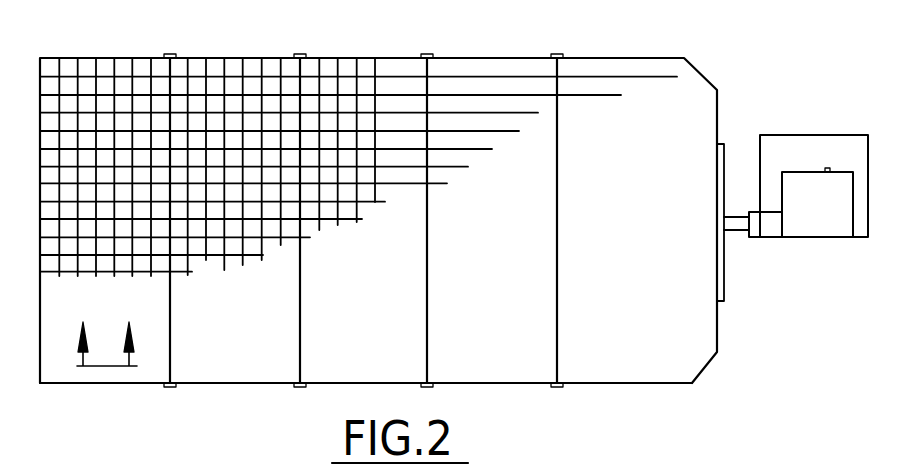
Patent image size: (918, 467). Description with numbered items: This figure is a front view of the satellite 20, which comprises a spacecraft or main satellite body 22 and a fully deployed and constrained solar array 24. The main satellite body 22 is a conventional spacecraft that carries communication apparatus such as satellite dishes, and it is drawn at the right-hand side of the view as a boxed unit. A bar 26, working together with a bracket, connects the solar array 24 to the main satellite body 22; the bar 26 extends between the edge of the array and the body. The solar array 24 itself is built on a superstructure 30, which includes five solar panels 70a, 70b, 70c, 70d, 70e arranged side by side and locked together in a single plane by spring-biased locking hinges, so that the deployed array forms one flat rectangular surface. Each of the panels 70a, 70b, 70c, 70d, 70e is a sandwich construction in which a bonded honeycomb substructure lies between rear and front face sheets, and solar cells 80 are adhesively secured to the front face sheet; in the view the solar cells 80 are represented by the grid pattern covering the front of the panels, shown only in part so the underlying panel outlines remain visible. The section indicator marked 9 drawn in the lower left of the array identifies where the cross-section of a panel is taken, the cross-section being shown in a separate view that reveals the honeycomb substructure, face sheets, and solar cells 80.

The satellite 20 is at (594, 399).
The main satellite body 22 is at (820, 133).
The solar array 24 is at (493, 383).
The bar 26 is at (735, 230).
The superstructure 30 is at (238, 367).
The solar panel 70a is at (122, 65).
The solar panel 70b is at (238, 68).
The solar panel 70c is at (362, 68).
The solar panel 70d is at (493, 68).
The solar panel 70e is at (620, 70).
The solar cells 80 is at (44, 123).
The section line 9- 9 is at (105, 350).